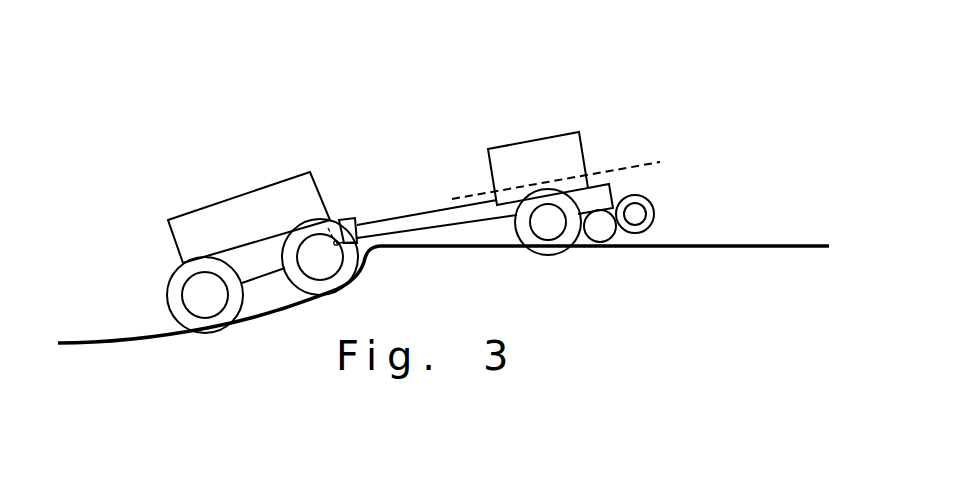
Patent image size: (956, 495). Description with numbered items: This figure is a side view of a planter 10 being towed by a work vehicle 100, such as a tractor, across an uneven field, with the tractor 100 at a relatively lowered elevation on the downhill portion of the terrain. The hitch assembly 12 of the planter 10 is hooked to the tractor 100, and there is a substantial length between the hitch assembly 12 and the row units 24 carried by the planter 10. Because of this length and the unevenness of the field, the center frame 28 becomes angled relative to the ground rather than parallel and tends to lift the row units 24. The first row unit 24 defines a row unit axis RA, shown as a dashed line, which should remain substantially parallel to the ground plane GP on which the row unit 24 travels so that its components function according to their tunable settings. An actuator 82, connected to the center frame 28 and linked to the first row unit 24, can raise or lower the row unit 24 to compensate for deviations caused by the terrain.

The work vehicle 100 is at (194, 185).
The planter 10 is at (505, 151).
The hitch assembly 12 is at (351, 203).
The actuator 82 is at (337, 218).
The center frame 28 is at (373, 227).
The first row unit 24 is at (593, 118).
The row unit axis RA is at (633, 162).
The ground plane GP is at (760, 245).